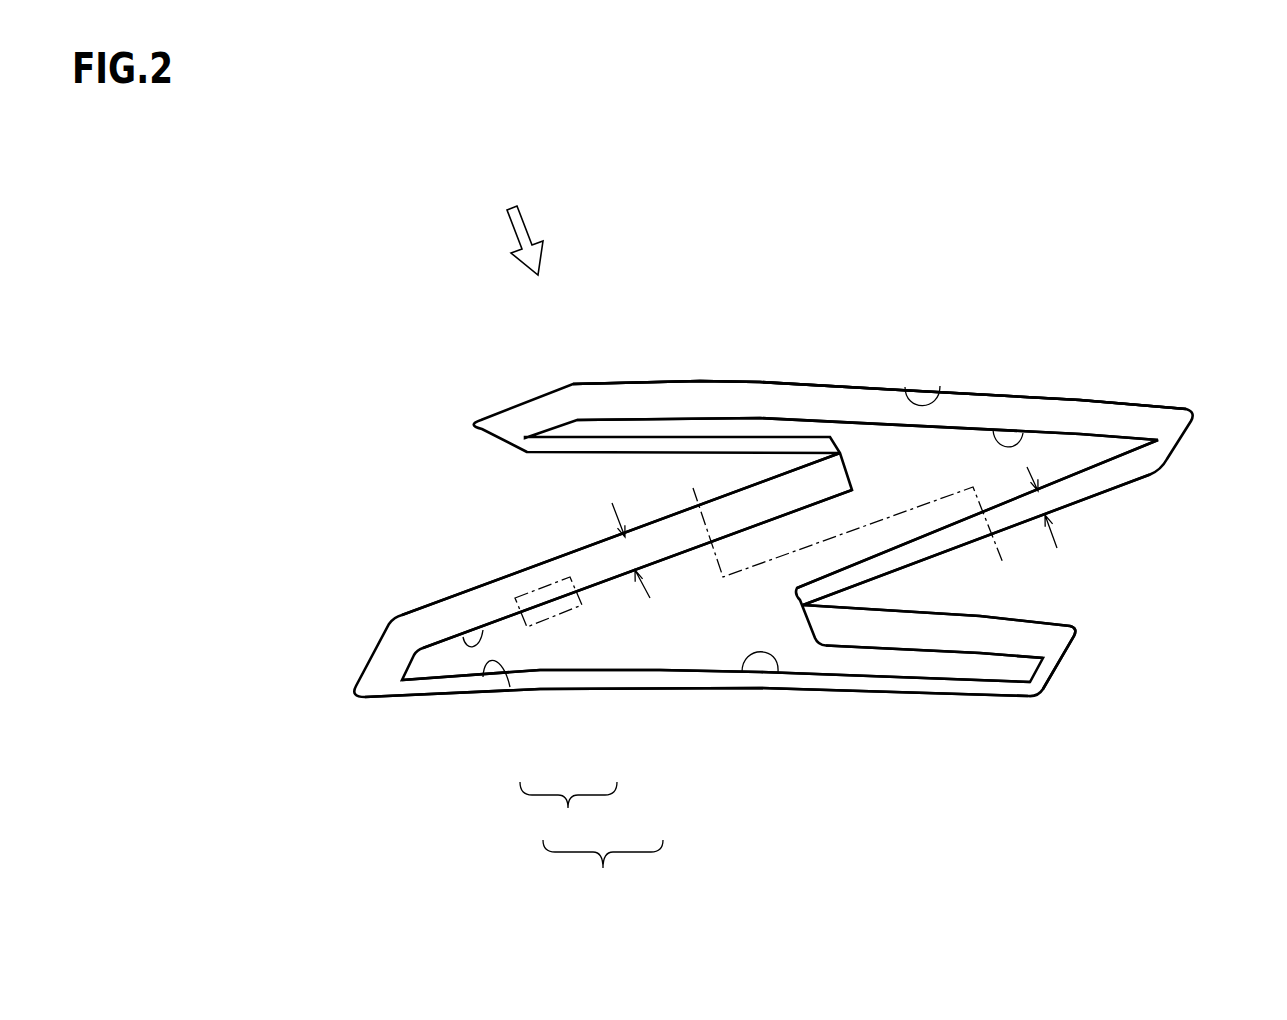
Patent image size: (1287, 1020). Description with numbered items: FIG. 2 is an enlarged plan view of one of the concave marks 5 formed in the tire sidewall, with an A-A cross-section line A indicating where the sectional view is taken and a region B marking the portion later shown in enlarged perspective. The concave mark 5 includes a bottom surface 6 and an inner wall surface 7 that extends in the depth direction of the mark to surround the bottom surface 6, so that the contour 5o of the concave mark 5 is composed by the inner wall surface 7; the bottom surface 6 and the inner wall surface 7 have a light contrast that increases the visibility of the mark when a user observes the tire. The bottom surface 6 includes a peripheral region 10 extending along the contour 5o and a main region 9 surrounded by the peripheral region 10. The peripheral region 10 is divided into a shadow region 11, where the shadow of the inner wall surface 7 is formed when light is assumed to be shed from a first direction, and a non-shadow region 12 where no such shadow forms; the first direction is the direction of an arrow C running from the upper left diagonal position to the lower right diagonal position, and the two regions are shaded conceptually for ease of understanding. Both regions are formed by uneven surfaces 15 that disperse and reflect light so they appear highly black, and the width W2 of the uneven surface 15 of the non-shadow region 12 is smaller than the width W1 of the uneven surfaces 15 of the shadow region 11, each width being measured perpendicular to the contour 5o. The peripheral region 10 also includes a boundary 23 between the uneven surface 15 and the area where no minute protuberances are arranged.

The concave mark 5 is at (502, 356).
The contour 5o is at (695, 383).
The shadow region 11 is at (779, 391).
The inner wall surface 7 is at (940, 386).
The boundary 23 is at (1023, 433).
The non-shadow region 12 is at (1130, 486).
The uneven surface 15 is at (895, 630).
The main region 9 is at (677, 645).
The peripheral region 10 is at (568, 814).
The bottom surface 6 is at (603, 870).
The width of the uneven surfaces of the shadow region W1 is at (617, 552).
The width of the uneven surface of the non-shadow region W2 is at (1053, 508).
The A-A cross-section line A is at (848, 530).
The region B is at (547, 567).
The arrow C is at (518, 224).